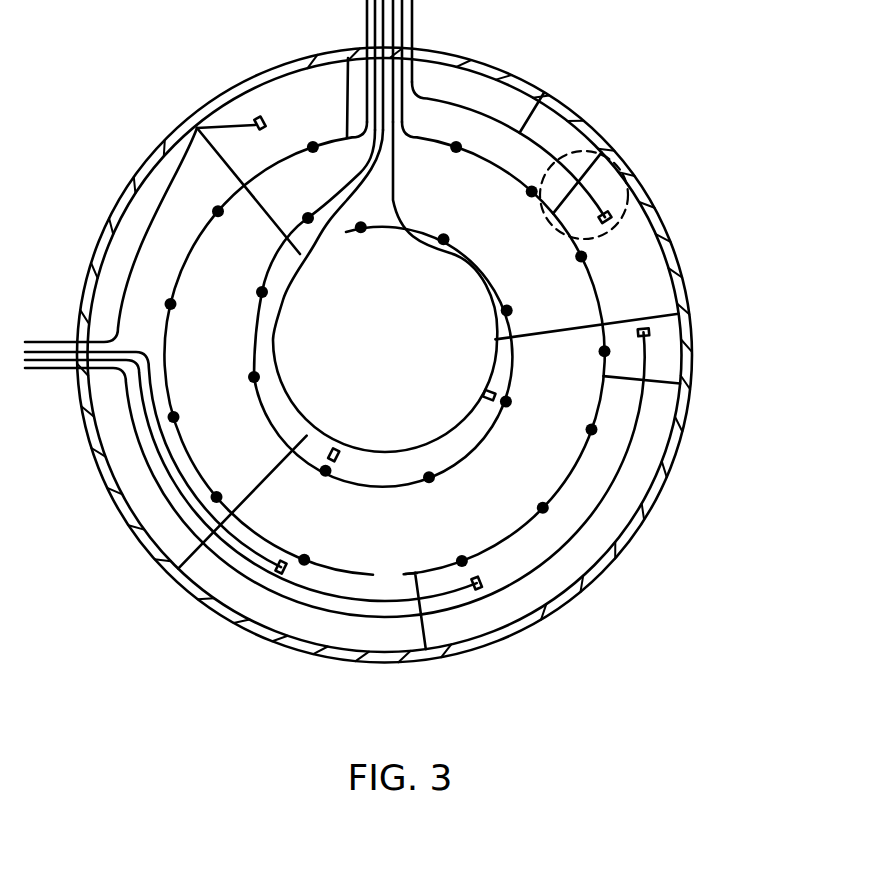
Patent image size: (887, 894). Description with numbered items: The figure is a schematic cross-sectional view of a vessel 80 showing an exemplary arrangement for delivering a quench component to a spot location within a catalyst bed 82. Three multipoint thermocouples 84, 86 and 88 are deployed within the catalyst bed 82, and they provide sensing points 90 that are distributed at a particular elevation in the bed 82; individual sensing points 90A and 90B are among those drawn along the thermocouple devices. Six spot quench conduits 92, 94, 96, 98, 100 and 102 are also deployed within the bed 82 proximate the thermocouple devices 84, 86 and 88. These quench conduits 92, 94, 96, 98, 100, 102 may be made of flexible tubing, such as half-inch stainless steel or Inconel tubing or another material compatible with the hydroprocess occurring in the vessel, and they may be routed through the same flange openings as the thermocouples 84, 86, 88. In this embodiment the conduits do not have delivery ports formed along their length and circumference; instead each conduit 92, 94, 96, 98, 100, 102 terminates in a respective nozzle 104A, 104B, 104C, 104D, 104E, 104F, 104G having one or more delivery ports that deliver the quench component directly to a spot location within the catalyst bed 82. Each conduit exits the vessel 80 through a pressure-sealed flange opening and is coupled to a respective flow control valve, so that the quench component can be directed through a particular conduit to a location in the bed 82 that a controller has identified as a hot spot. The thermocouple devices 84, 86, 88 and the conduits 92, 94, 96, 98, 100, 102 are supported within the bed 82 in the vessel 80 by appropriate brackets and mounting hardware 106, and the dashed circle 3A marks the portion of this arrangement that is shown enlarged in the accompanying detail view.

The vessel 80 is at (580, 597).
The catalyst bed 82 is at (608, 527).
The multipoint thermocouple 84 is at (333, 140).
The multipoint thermocouple 86 is at (548, 92).
The multipoint thermocouple 88 is at (469, 447).
The sensing point 90 is at (217, 217).
The sensing point 90A is at (526, 194).
The sensing point 90B is at (577, 259).
The spot quench conduit 92 is at (160, 207).
The spot quench conduit 94 is at (177, 447).
The spot quench conduit 96 is at (300, 585).
The spot quench conduit 98 is at (633, 440).
The spot quench conduit 100 is at (423, 97).
The spot quench conduit 102 is at (285, 305).
The nozzle 104A is at (610, 224).
The nozzle 104B is at (650, 333).
The nozzle 104C is at (480, 590).
The nozzle 104D is at (286, 558).
The nozzle 104E is at (258, 117).
The nozzle 104F is at (338, 451).
The nozzle 104G is at (482, 394).
The brackets and mounting hardware 106 is at (197, 140).
The detail view region 3A is at (633, 216).